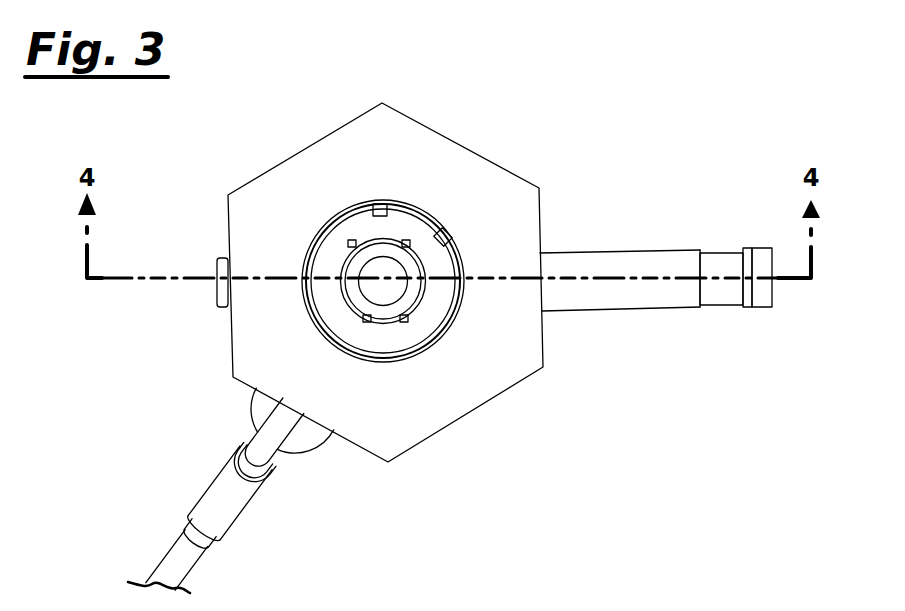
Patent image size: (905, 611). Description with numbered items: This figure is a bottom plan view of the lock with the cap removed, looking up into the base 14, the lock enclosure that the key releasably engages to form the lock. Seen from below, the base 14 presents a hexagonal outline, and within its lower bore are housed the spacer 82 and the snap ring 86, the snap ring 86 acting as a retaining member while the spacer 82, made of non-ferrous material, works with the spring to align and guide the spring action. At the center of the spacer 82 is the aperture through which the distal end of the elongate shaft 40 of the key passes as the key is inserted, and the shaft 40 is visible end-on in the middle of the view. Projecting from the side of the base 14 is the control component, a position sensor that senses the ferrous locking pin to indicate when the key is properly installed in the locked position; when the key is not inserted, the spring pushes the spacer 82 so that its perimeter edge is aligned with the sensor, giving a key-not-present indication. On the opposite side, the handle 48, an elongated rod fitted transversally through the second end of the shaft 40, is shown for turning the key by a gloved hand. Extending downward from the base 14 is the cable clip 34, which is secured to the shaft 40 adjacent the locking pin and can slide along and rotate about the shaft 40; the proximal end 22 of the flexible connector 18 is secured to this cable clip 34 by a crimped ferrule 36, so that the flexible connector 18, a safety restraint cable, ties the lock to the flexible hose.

The base 14 is at (492, 92).
The flexible connector 18 is at (170, 553).
The proximal end 22 is at (257, 433).
The cable clip 34 is at (253, 403).
The crimped ferrule 36 is at (197, 505).
The elongate shaft 40 is at (395, 287).
The handle 48 is at (217, 260).
The spacer 82 is at (343, 245).
The snap ring 86 is at (347, 212).